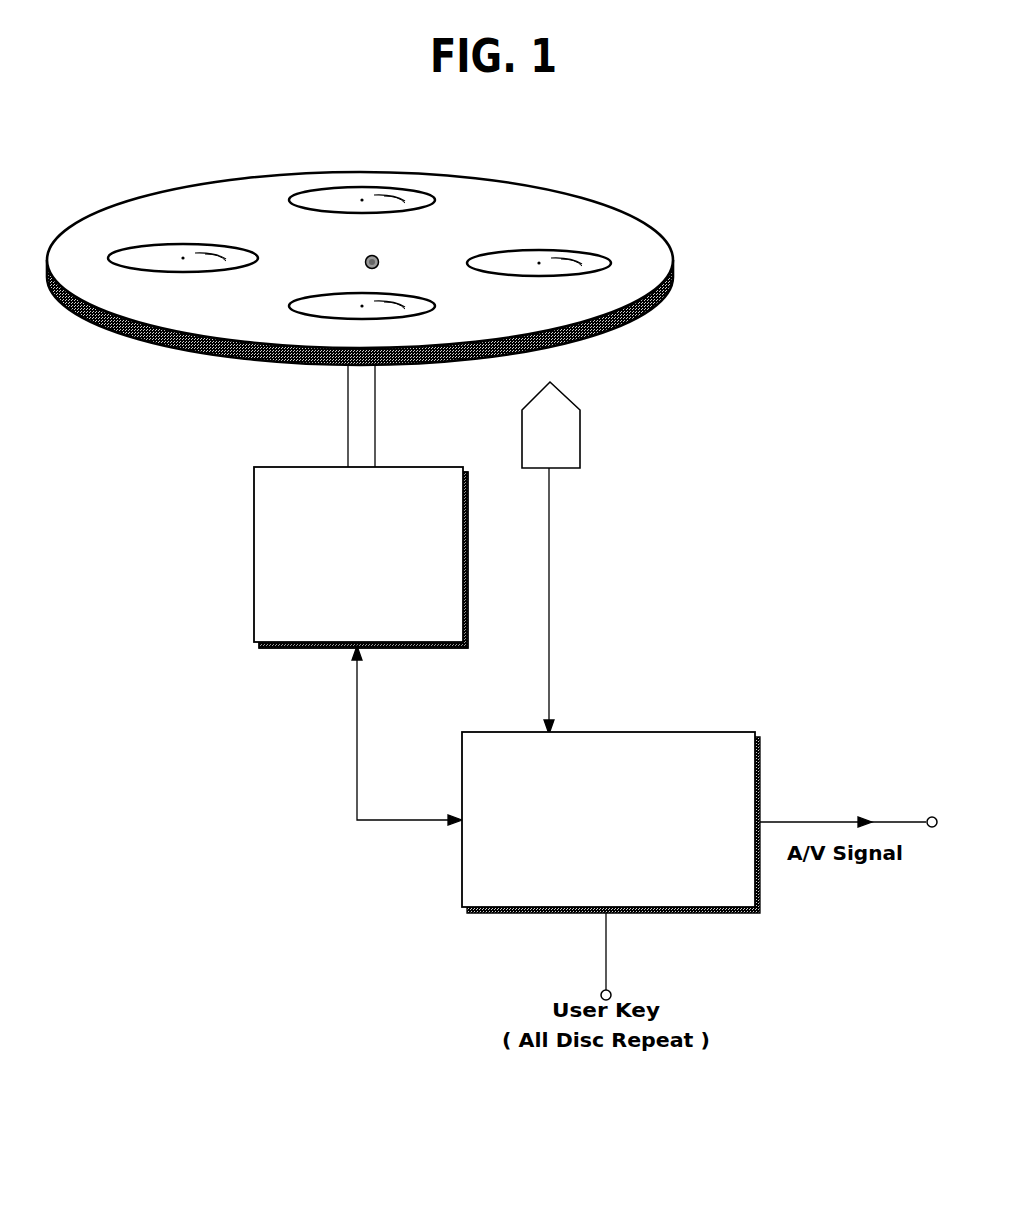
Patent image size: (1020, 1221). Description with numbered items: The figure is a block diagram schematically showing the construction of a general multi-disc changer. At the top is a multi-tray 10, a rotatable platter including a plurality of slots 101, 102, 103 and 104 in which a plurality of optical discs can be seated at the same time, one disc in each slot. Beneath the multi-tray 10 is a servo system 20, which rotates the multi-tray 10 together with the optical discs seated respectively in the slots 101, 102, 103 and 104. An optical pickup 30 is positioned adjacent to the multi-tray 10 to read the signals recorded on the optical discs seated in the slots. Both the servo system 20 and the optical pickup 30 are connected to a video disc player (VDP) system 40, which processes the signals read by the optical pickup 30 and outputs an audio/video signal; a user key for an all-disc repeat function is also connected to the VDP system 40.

The multi-tray 10 is at (495, 191).
The slot 101 is at (580, 251).
The slot 102 is at (385, 189).
The slot 103 is at (200, 247).
The slot 104 is at (383, 290).
The servo system 20 is at (403, 465).
The optical pickup 30 is at (580, 435).
The video disc player (VDP) system 40 is at (697, 733).